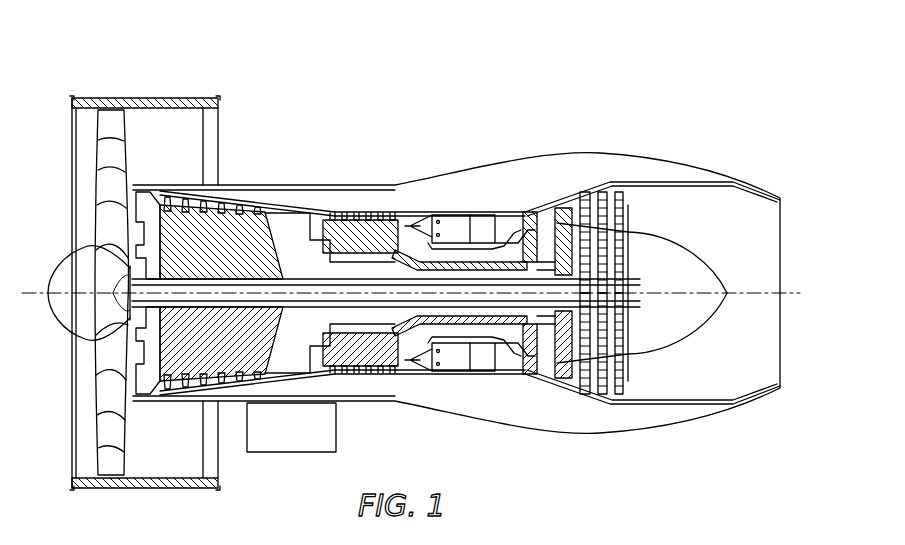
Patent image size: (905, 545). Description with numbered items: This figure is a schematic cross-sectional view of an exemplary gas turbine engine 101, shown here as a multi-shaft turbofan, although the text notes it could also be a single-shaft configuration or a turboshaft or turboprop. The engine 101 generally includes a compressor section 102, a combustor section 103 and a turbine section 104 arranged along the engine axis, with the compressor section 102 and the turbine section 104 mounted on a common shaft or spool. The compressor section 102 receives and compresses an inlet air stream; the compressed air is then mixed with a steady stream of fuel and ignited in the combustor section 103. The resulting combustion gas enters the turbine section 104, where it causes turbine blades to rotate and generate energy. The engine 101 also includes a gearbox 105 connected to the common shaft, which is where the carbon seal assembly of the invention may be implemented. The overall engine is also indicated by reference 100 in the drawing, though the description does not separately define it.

The gas turbine engine 100 is at (417, 255).
The gas turbine engine 101 is at (555, 62).
The compressor section 102 is at (300, 384).
The combustor section 103 is at (447, 368).
The turbine section 104 is at (577, 396).
The gearbox 105 is at (310, 439).